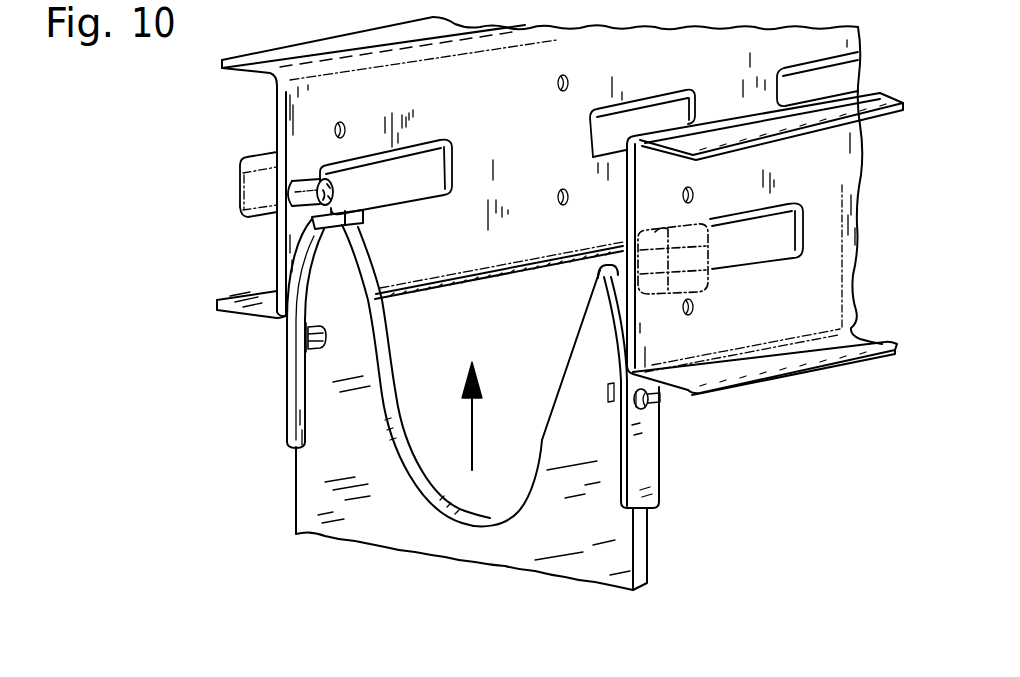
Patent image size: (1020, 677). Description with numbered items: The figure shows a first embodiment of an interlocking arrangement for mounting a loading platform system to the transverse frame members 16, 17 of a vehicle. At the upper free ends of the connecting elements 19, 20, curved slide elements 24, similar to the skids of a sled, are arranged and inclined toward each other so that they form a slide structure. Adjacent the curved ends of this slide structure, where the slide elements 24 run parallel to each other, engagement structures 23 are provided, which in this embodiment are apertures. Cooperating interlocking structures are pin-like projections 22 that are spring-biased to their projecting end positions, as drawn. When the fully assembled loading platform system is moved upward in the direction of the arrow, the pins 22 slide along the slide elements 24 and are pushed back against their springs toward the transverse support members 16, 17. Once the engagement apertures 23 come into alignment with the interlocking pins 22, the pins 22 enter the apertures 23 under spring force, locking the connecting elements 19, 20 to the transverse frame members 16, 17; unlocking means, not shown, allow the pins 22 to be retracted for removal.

The transverse frame member 16 is at (257, 297).
The transverse frame member 17 is at (782, 358).
The connecting element 19 is at (471, 556).
The connecting element 20 is at (528, 546).
The interlocking pin 22 is at (297, 208).
The engagement aperture 23 is at (305, 332).
The slide element 24 is at (300, 266).